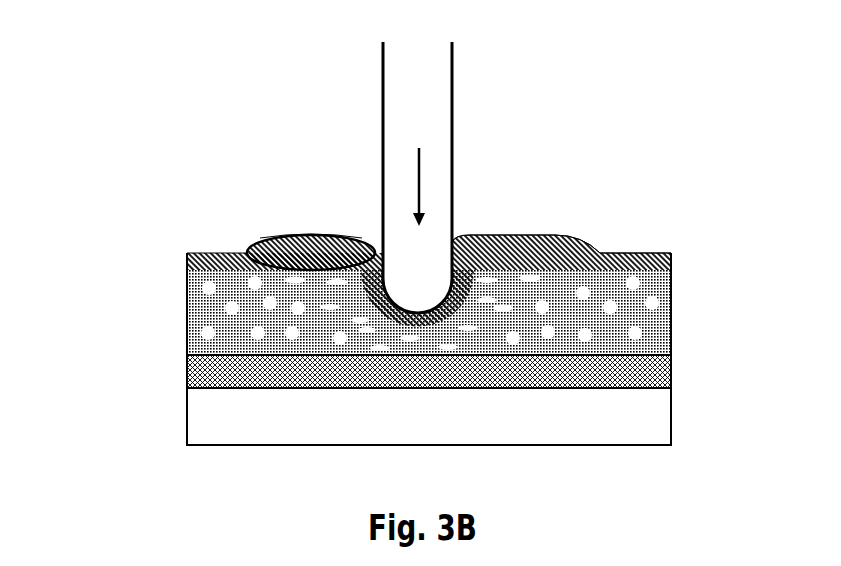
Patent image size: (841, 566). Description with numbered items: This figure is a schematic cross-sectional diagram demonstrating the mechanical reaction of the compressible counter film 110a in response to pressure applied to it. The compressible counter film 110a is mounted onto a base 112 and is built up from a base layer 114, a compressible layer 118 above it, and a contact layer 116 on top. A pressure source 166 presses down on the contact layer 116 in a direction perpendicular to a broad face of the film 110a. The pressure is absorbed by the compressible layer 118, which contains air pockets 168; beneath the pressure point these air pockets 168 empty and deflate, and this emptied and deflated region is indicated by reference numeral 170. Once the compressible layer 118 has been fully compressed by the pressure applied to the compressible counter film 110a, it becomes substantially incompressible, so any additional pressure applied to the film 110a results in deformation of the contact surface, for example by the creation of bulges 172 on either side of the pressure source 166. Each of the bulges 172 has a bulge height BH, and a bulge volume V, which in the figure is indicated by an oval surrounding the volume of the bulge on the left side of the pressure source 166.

The pressure source 166 is at (438, 142).
The bulges 172 is at (280, 237).
The emptied and deflated air pockets 170 is at (333, 233).
The bulge volume V is at (250, 243).
The bulge height BH is at (500, 262).
The air pockets 168 is at (672, 253).
The contact layer 116 is at (187, 262).
The compressible layer 118 is at (187, 315).
The base layer 114 is at (187, 362).
The base 112 is at (215, 433).
The compressible counter film 110a is at (683, 387).